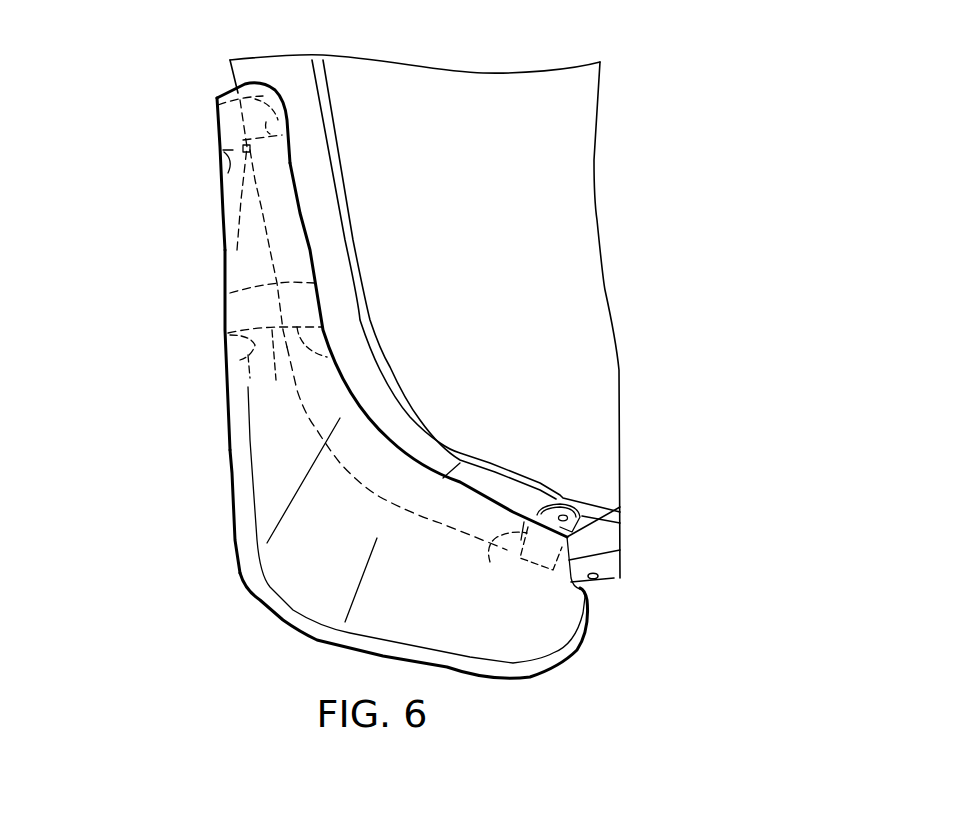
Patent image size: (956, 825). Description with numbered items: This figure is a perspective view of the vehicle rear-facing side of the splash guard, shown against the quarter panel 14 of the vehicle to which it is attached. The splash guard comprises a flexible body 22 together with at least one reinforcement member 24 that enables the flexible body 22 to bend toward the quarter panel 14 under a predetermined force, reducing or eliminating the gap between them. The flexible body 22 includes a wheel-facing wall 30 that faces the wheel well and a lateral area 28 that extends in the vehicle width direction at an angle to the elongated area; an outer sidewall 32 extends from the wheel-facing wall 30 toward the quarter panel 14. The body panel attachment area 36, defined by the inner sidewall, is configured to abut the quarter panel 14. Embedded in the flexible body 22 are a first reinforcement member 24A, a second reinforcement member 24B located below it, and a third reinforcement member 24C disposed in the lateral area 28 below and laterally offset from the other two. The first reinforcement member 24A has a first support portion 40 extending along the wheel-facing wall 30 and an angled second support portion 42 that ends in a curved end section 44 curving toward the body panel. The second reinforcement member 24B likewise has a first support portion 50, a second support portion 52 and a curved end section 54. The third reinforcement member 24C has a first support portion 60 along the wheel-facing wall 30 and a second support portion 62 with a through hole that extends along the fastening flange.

The quarter panel 14 is at (293, 78).
The flexible body 22 is at (242, 578).
The reinforcement member 24 is at (208, 322).
The first reinforcement member 24A is at (217, 128).
The second reinforcement member 24B is at (227, 307).
The third reinforcement member 24C is at (533, 508).
The lateral area 28 is at (470, 487).
The wheel-facing wall 30 is at (141, 350).
The side edge of mud guard 32 is at (230, 452).
The body panel attachment area 36 is at (407, 493).
The first support portion 40 is at (217, 180).
The second support portion 42 is at (257, 223).
The curved end section 44 is at (278, 113).
The first support portion 50 is at (232, 360).
The second support portion 52 is at (272, 368).
The curved end section 54 is at (328, 356).
The first support portion 60 is at (490, 562).
The second support portion 62 is at (582, 522).